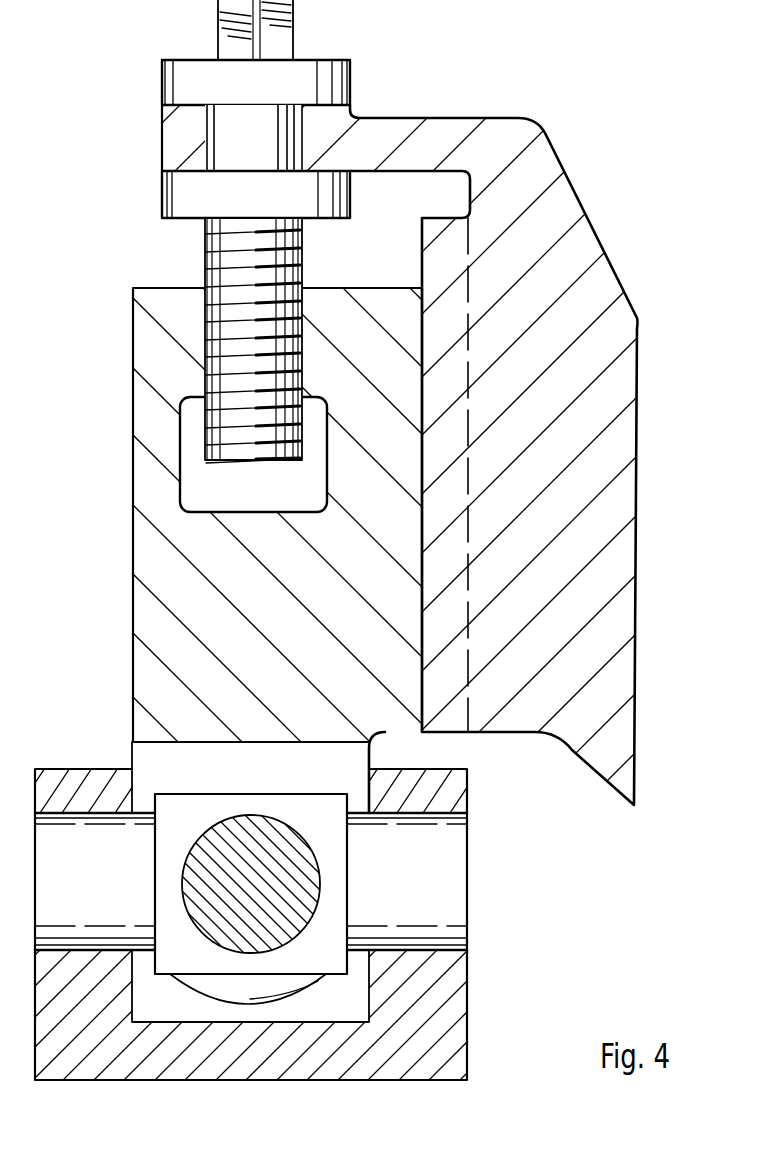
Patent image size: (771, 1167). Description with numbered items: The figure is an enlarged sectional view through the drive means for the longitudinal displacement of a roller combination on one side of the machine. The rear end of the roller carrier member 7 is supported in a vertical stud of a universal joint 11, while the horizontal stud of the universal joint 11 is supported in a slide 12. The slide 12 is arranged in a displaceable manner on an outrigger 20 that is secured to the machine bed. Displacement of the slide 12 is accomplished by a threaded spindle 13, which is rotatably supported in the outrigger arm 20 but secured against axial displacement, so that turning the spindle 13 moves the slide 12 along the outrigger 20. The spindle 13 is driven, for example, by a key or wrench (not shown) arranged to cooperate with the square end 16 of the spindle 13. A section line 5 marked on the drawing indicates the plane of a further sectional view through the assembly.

The section line V-V 5 is at (248, 720).
The roller carrier member 7 is at (428, 1048).
The universal joint 11 is at (328, 843).
The slide 12 is at (347, 617).
The threaded spindle 13 is at (258, 340).
The square end 16 is at (300, 22).
The outrigger 20 is at (548, 207).